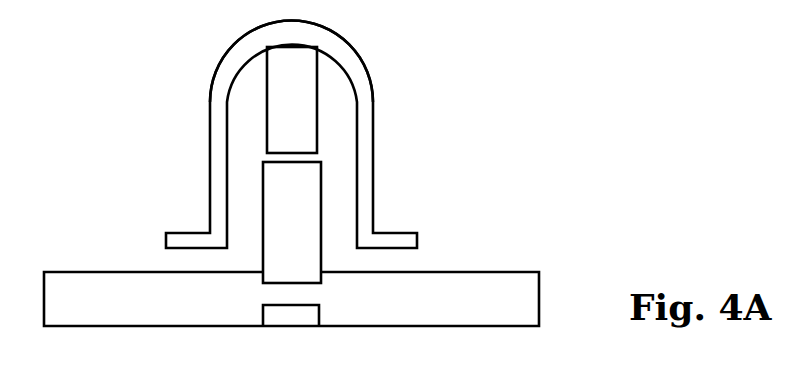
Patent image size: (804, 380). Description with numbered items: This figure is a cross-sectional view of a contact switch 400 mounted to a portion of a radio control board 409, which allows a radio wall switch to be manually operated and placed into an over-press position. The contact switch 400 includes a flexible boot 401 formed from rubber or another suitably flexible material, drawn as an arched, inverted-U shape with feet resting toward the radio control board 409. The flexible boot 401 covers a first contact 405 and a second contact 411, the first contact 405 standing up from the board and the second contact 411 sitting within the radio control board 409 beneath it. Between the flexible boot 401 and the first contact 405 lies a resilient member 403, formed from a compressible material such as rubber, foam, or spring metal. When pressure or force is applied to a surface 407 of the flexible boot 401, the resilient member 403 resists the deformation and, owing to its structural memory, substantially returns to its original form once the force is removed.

The contact switch 400 is at (116, 56).
The flexible boot 401 is at (374, 142).
The resilient member 403 is at (307, 70).
The first contact 405 is at (322, 188).
The surface 407 is at (338, 43).
The radio control board 409 is at (540, 302).
The second contact 411 is at (290, 327).